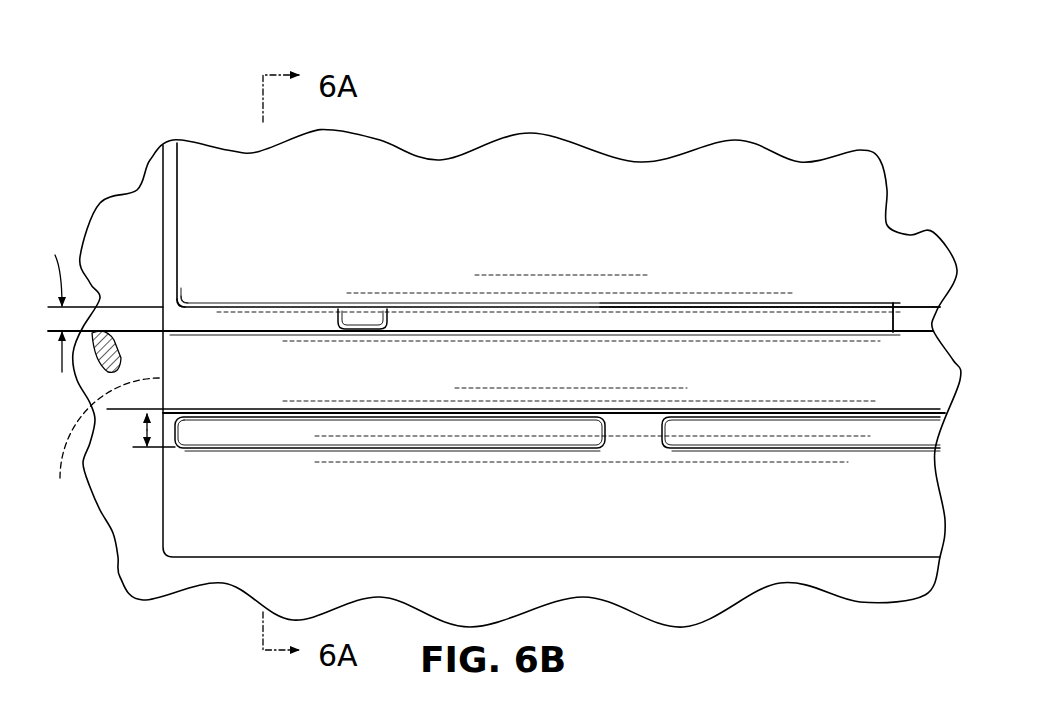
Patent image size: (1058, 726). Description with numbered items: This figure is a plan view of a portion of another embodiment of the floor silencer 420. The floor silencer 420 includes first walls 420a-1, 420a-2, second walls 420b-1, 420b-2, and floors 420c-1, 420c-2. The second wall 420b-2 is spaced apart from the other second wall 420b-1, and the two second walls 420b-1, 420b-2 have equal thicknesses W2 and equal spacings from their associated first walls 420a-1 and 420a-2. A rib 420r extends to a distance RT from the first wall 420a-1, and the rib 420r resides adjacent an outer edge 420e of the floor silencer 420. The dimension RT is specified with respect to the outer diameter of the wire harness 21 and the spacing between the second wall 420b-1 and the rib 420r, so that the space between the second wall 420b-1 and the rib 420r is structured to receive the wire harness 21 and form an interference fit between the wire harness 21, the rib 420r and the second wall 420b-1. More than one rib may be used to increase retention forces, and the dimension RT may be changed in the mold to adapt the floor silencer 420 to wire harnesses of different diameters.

The floor silencer 420 is at (158, 203).
The first wall 420a-1 is at (252, 306).
The first wall 420a-2 is at (688, 305).
The floor 420c-1 is at (193, 318).
The floor 420c-2 is at (836, 320).
The rib 420r is at (358, 318).
The second wall 420b-1 is at (247, 433).
The second wall 420b-2 is at (760, 428).
The outer edge 420e is at (101, 445).
The wire harness 21 is at (893, 307).
The rib distance RT is at (103, 300).
The second wall thickness W2 is at (140, 430).